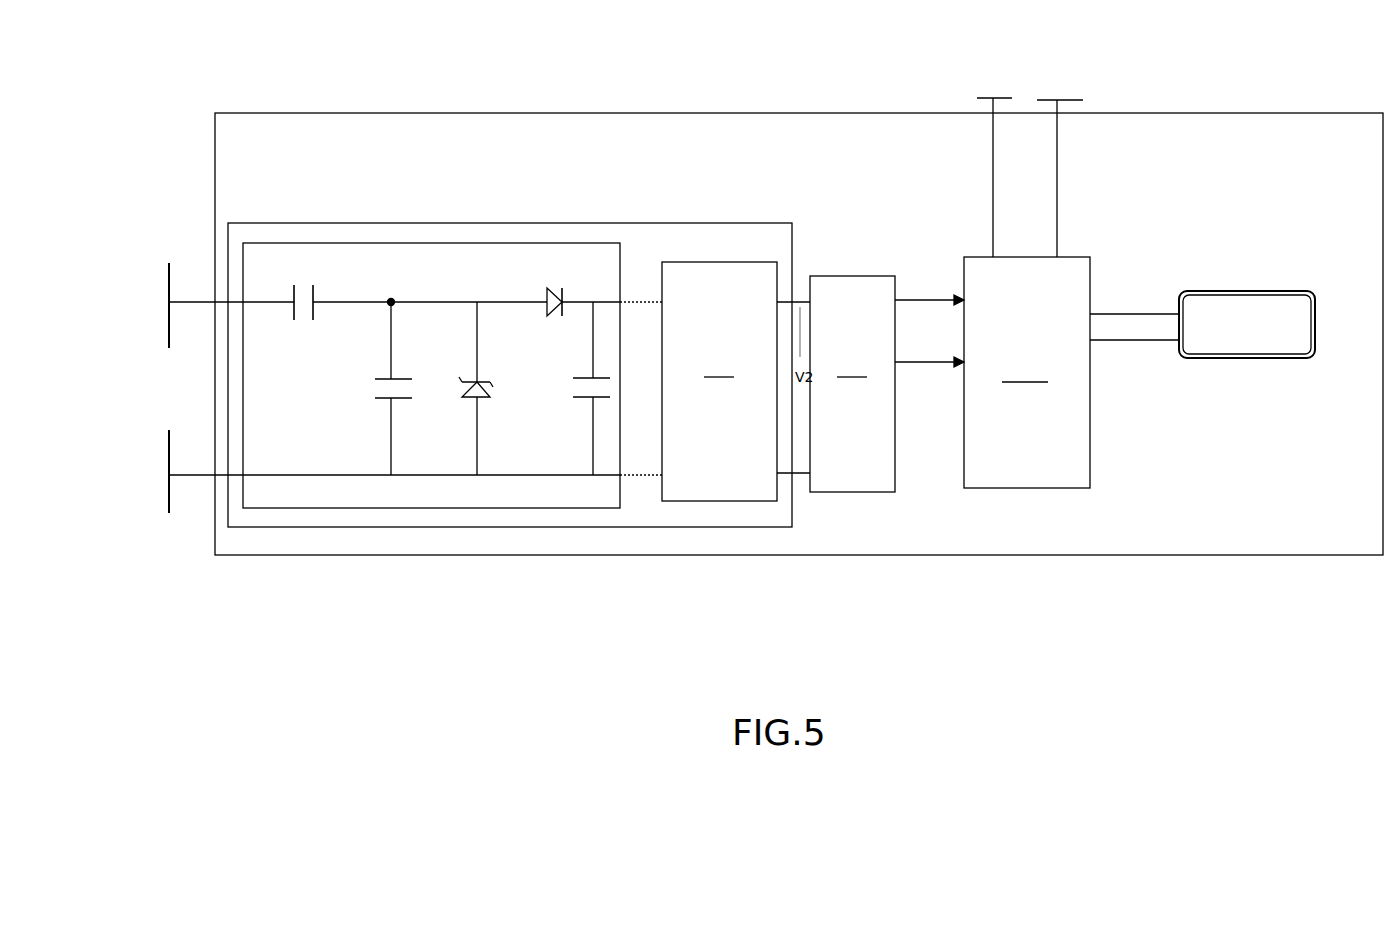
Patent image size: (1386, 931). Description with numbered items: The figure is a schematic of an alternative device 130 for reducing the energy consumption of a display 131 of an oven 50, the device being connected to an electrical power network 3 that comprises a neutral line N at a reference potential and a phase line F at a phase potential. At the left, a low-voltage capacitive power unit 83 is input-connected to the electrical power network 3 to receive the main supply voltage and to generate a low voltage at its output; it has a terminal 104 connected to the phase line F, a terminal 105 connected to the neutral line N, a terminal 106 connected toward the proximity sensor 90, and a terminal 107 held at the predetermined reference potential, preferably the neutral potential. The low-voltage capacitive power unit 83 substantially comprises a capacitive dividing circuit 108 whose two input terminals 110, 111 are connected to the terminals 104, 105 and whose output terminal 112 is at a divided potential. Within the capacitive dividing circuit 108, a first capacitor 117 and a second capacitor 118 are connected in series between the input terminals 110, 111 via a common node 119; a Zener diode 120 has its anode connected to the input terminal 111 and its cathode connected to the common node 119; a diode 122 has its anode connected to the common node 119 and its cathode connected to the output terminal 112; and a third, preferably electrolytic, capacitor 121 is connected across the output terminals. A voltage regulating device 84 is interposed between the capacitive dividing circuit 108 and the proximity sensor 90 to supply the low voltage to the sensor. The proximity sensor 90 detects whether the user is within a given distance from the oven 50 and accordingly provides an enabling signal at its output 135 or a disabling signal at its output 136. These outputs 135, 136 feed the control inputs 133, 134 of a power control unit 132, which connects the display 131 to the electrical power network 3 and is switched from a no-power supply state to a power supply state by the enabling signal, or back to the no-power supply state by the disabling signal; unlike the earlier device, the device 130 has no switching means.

The electrical power network 3 is at (169, 445).
The oven 50 is at (880, 113).
The low-voltage capacitive power unit 83 is at (572, 223).
The voltage regulating device 84 is at (719, 381).
The proximity sensor 90 is at (852, 384).
The terminal 104 is at (193, 302).
The terminal 105 is at (195, 480).
The terminal 106 is at (793, 300).
The terminal 107 is at (792, 475).
The capacitive dividing circuit 108 is at (484, 500).
The input terminal 110 is at (232, 302).
The input terminal 111 is at (236, 480).
The output terminal 112 is at (627, 302).
The first capacitor 117 is at (305, 278).
The second capacitor 118 is at (362, 396).
The common node 119 is at (391, 298).
The Zener diode 120 is at (490, 394).
The third capacitor 121 is at (573, 390).
The diode 122 is at (556, 288).
The device 130 is at (695, 188).
The display 131 is at (1245, 291).
The power control unit 132 is at (1027, 372).
The control input 133 is at (963, 255).
The control input 134 is at (948, 366).
The output 135 is at (903, 300).
The output 136 is at (912, 365).